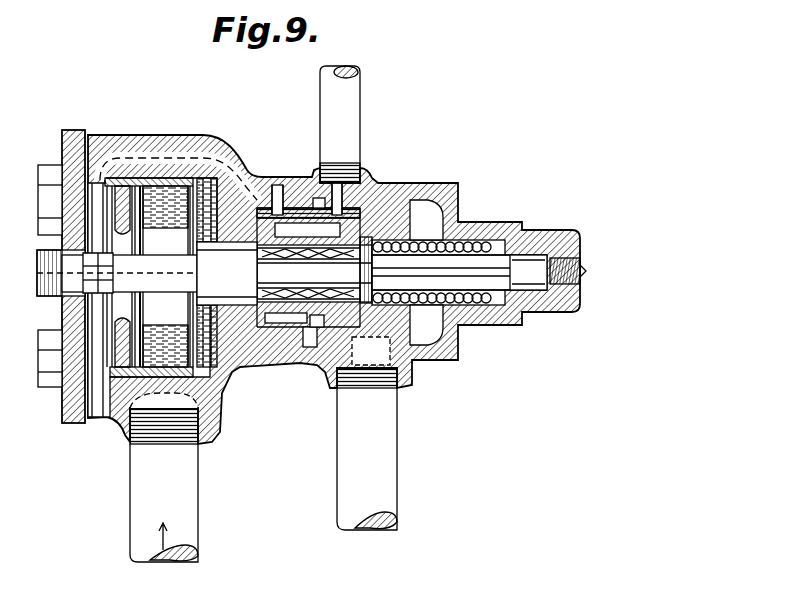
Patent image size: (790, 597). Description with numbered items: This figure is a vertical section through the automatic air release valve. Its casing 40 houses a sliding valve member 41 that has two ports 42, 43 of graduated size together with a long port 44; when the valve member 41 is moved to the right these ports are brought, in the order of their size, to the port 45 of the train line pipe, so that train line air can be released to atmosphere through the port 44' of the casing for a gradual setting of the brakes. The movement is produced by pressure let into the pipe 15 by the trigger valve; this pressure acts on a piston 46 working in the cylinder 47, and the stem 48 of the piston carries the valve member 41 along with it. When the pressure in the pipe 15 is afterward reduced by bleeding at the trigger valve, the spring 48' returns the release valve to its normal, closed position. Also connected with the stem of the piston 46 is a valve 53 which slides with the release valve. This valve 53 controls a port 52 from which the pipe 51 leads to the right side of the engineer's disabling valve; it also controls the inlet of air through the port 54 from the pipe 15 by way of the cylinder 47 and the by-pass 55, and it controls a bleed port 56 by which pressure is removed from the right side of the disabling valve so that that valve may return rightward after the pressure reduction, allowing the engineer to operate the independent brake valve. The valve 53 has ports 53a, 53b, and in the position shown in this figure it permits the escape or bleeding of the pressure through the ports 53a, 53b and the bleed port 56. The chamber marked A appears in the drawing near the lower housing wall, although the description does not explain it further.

The pipe 15 is at (142, 499).
The casing 40 is at (308, 274).
The valve member 41 is at (316, 372).
The port 42 is at (330, 330).
The port 43 is at (318, 323).
The long port 44 is at (308, 282).
The port of the casing 44' is at (292, 353).
The port of the train line pipe 45 is at (343, 343).
The piston 46 is at (134, 306).
The cylinder 47 is at (140, 328).
The stem 48 is at (117, 273).
The spring 48' is at (479, 245).
The pipe 51 is at (352, 112).
The port 52 is at (372, 183).
The valve 53 is at (370, 197).
The port 53a is at (230, 280).
The port 53b is at (231, 260).
The port 54 is at (313, 205).
The by-pass 55 is at (196, 156).
The bleed port 56 is at (275, 200).
The chamber A is at (247, 366).